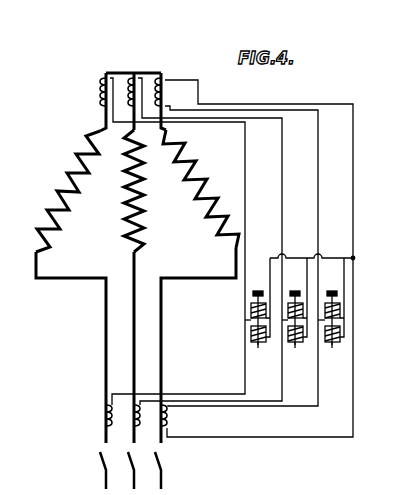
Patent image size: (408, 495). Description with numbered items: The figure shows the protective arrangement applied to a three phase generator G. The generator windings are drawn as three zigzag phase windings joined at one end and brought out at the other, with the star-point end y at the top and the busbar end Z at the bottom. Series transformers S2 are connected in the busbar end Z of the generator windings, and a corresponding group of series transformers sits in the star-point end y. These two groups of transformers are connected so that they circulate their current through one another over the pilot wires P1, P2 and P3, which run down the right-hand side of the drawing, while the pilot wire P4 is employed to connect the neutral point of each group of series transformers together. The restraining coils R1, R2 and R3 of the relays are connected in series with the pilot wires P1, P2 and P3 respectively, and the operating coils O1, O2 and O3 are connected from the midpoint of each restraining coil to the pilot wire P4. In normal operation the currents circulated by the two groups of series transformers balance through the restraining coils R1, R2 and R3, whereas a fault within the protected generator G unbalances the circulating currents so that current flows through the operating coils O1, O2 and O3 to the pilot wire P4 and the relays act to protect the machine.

The star-point end y is at (104, 74).
The three phase generator G is at (122, 222).
The restraining coil R1 is at (112, 88).
The restraining coil R2 is at (138, 96).
The restraining coil R3 is at (166, 92).
The series transformers S2 is at (166, 416).
The busbar end Z is at (108, 472).
The pilot wire P1 is at (245, 208).
The pilot wire P2 is at (282, 208).
The pilot wire P3 is at (318, 208).
The pilot wire P4 is at (353, 208).
The operating coil O1 is at (251, 320).
The operating coil O2 is at (290, 300).
The operating coil O3 is at (341, 314).
The resistance R is at (252, 343).